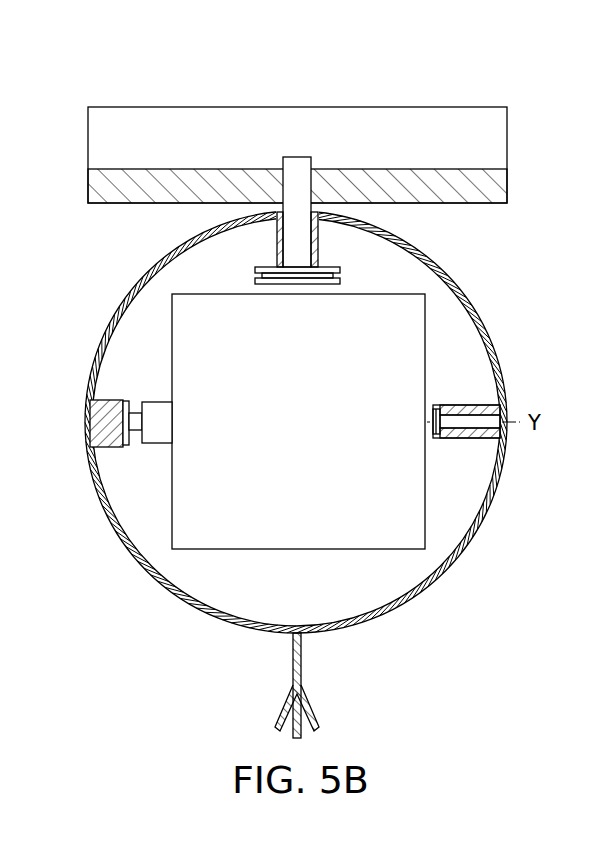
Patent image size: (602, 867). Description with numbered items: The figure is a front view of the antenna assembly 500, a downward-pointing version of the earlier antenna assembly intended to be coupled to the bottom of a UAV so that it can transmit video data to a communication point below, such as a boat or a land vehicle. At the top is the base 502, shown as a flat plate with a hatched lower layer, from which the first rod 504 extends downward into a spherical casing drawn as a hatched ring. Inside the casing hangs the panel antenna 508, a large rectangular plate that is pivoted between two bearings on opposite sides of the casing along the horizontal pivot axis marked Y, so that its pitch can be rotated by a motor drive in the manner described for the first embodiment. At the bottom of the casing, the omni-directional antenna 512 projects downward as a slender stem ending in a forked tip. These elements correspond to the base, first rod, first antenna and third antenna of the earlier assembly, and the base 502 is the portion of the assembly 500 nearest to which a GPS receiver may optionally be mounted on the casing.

The antenna assembly 500 is at (482, 49).
The base 502 is at (508, 138).
The first rod 504 is at (297, 165).
The panel antenna 508 is at (297, 540).
The omni-directional antenna 512 is at (303, 659).